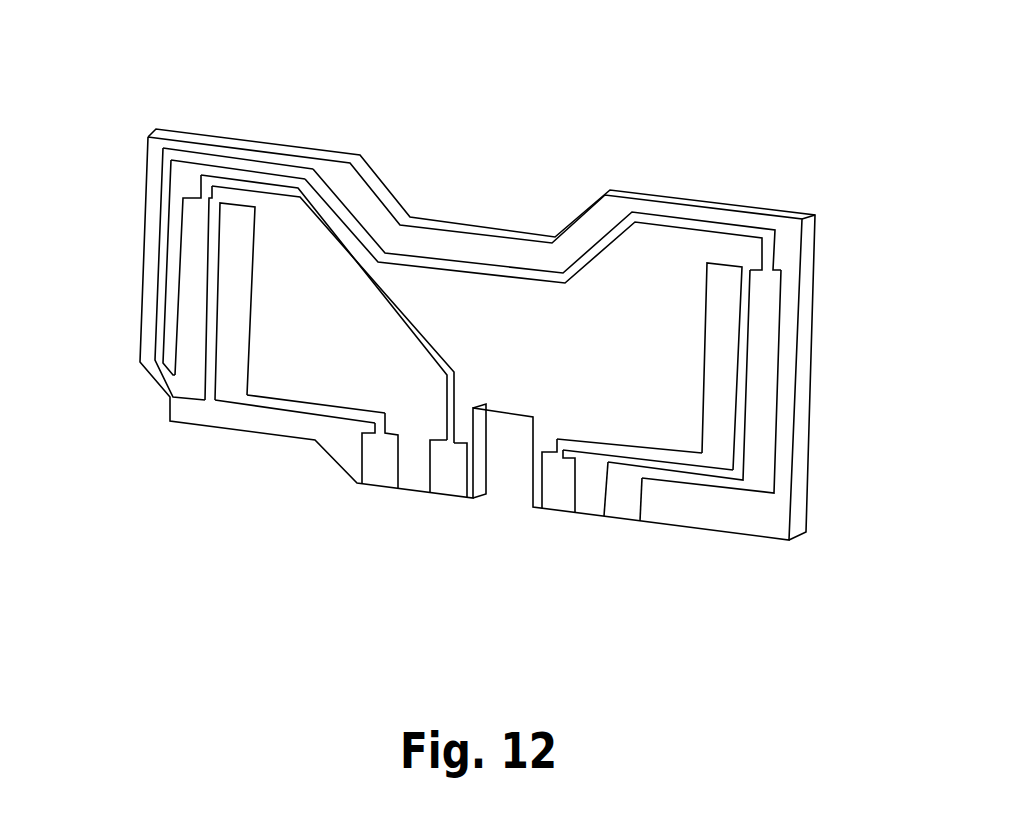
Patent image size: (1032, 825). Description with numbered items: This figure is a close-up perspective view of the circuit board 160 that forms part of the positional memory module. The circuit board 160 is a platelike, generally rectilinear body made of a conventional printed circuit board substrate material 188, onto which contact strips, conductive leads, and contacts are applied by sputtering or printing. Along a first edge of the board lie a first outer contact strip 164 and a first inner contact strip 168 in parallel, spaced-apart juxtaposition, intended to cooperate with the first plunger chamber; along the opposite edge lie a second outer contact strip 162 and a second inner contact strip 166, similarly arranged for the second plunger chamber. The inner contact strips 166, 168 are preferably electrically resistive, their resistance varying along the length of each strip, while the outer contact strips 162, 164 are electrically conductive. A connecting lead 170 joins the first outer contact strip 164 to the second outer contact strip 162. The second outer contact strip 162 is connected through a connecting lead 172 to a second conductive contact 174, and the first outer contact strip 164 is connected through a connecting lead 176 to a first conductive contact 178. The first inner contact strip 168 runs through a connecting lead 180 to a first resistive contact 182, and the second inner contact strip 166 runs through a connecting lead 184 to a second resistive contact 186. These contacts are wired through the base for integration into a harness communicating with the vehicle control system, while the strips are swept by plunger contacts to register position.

The circuit board 160 is at (400, 139).
The second outer contact strip 162 is at (765, 358).
The first outer contact strip 164 is at (191, 330).
The second inner contact strip 166 is at (720, 308).
The first inner contact strip 168 is at (233, 235).
The connecting lead 170 is at (277, 168).
The connecting lead 172 is at (705, 485).
The second conductive contact 174 is at (623, 502).
The connecting lead 176 is at (392, 297).
The first conductive contact 178 is at (442, 477).
The connecting lead 180 is at (285, 407).
The first resistive contact 182 is at (378, 470).
The connecting lead 184 is at (593, 447).
The second resistive contact 186 is at (558, 487).
The printed circuit board substrate material 188 is at (667, 272).